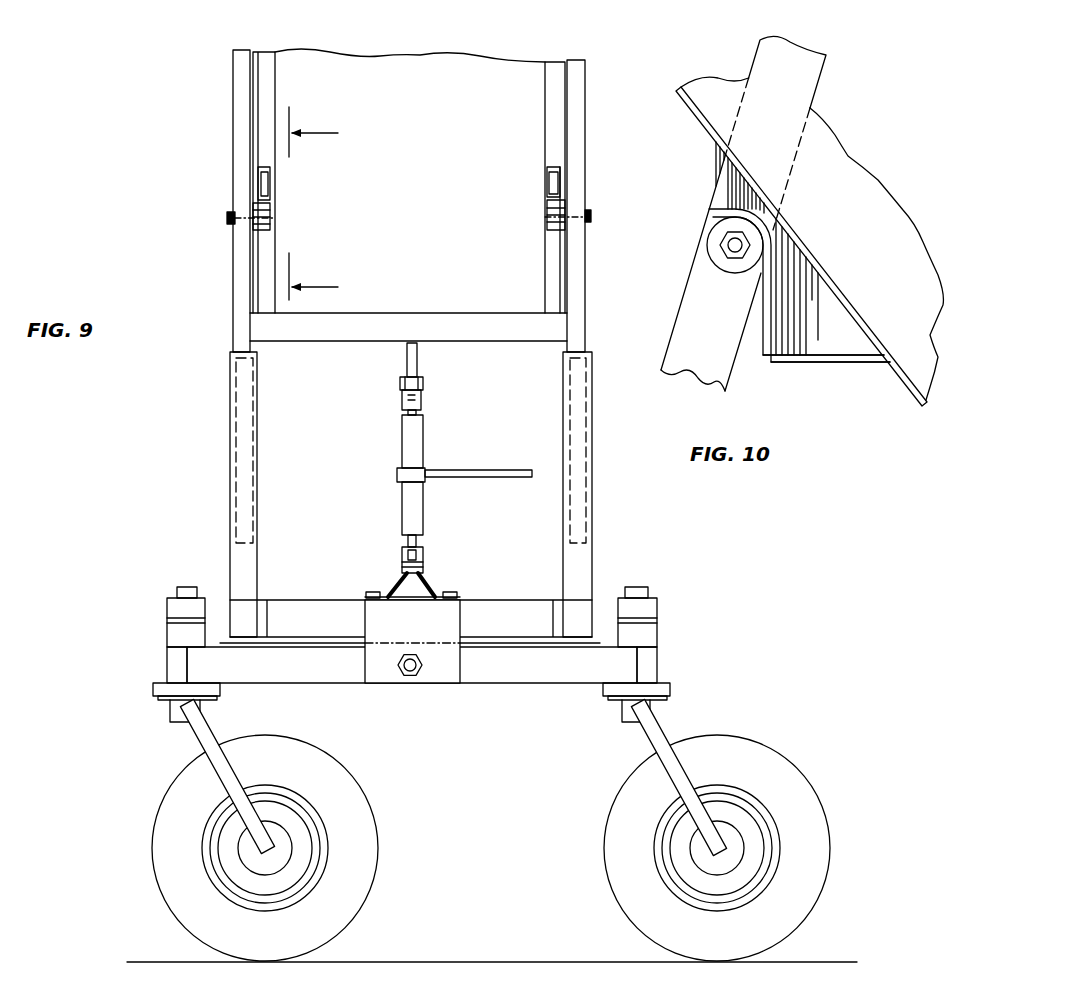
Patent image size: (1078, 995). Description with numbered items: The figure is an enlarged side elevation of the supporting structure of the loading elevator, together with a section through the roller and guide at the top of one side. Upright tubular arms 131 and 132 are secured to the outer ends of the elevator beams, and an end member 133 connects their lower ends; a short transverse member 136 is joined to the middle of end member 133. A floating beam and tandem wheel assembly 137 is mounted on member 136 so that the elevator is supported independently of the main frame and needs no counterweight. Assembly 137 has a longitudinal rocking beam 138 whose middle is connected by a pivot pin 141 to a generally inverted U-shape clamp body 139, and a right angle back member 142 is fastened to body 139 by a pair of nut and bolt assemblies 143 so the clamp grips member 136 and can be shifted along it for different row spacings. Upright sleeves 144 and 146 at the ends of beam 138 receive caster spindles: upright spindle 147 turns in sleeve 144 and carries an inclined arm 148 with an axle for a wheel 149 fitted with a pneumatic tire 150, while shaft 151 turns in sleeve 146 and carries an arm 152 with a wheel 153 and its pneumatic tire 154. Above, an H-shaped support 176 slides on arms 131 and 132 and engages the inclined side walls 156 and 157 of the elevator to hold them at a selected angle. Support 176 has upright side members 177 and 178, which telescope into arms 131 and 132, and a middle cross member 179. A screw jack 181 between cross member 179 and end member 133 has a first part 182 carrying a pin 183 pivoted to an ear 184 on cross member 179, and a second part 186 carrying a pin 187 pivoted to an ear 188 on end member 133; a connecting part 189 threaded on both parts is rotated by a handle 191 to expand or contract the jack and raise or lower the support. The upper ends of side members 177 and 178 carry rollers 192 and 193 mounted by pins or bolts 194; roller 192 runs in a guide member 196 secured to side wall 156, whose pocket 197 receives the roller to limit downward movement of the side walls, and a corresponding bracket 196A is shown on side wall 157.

In FIG. 9, the upright tubular arm 131 is at (240, 423).
In FIG. 9, the upright tubular arm 132 is at (594, 437).
In FIG. 9, the end member 133 is at (305, 610).
In FIG. 9, the short transverse member 136 is at (437, 583).
In FIG. 9, the floating beam and tandem wheel assembly 137 is at (720, 603).
In FIG. 9, the longitudinal rocking beam 138 is at (522, 668).
In FIG. 9, the clamp body 139 is at (440, 667).
In FIG. 9, the pivot pin 141 is at (398, 670).
In FIG. 9, the right angle back member 142 is at (395, 587).
In FIG. 9, the nut and bolt assemblies 143 is at (452, 593).
In FIG. 9, the upright sleeve 144 is at (174, 637).
In FIG. 9, the upright sleeve 146 is at (658, 655).
In FIG. 9, the upright spindle 147 is at (181, 586).
In FIG. 9, the inclined arm 148 is at (197, 735).
In FIG. 9, the wheel 149 is at (228, 865).
In FIG. 9, the pneumatic tire 150 is at (350, 890).
In FIG. 9, the upright shaft 151 is at (642, 586).
In FIG. 9, the arm 152 is at (655, 728).
In FIG. 9, the wheel 153 is at (740, 823).
In FIG. 9, the right wheel 154 is at (800, 900).
In FIG. 9, the side wall 156 is at (263, 90).
In FIG. 10, the side wall 156 is at (716, 91).
In FIG. 9, the side wall 157 is at (553, 98).
In FIG. 9, the H-shaped support 176 is at (231, 284).
In FIG. 9, the upright side member 177 is at (236, 107).
In FIG. 9, the upright side member 178 is at (575, 98).
In FIG. 9, the middle cross member 179 is at (502, 320).
In FIG. 9, the screw jack 181 is at (370, 455).
In FIG. 9, the first part 182 is at (424, 397).
In FIG. 9, the pin 183 is at (401, 387).
In FIG. 9, the ear 184 is at (406, 362).
In FIG. 9, the second part 186 is at (427, 552).
In FIG. 9, the pin 187 is at (405, 562).
In FIG. 9, the ear 188 is at (433, 567).
In FIG. 9, the connecting part 189 is at (416, 447).
In FIG. 9, the handle 191 is at (503, 470).
In FIG. 9, the roller 192 is at (272, 228).
In FIG. 10, the roller 192 is at (724, 262).
In FIG. 9, the roller 193 is at (548, 222).
In FIG. 9, the pin or bolt 194 is at (229, 218).
In FIG. 10, the pin or bolt 194 is at (727, 246).
In FIG. 9, the guide member 196 is at (263, 182).
In FIG. 10, the guide member 196 is at (813, 344).
In FIG. 9, the right clamp bracket 196A is at (553, 182).
In FIG. 10, the pocket 197 is at (729, 221).